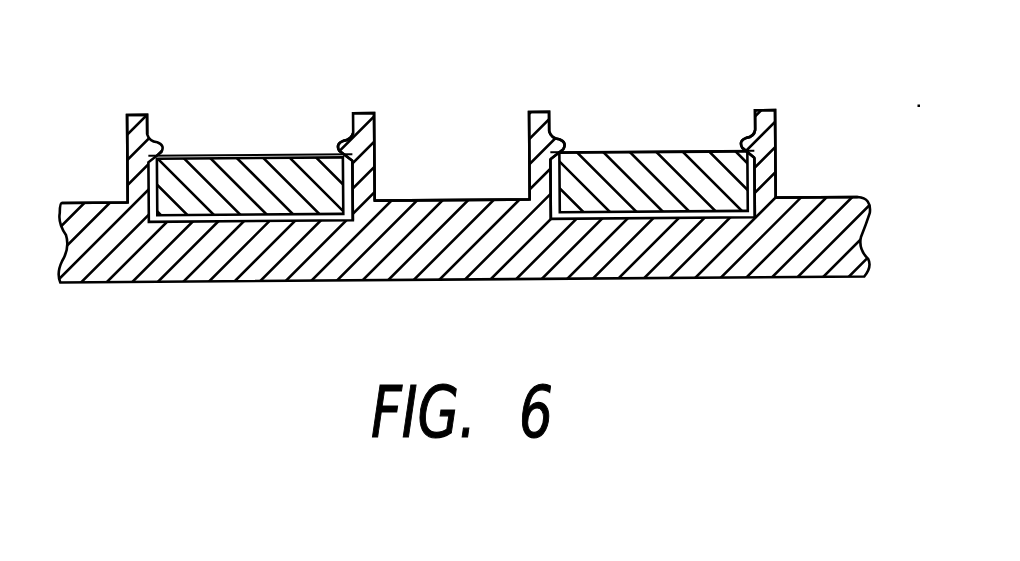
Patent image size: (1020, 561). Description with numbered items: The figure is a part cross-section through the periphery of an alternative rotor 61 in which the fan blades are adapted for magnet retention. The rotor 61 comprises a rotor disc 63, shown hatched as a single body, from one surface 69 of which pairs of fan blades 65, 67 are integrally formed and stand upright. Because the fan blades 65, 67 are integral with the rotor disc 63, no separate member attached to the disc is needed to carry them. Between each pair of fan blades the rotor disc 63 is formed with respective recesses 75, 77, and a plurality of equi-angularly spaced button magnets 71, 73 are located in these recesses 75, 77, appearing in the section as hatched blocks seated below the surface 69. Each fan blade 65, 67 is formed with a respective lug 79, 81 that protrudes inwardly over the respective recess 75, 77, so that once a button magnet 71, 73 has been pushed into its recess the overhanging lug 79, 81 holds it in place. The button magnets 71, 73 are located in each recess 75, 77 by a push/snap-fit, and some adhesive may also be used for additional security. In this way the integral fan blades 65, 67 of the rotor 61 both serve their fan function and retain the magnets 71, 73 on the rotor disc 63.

The rotor 61 is at (510, 196).
The rotor disc 63 is at (768, 265).
The fan blade 65 is at (368, 136).
The fan blade 67 is at (530, 128).
The surface 69 is at (815, 200).
The button magnet 71 is at (208, 148).
The button magnet 73 is at (658, 142).
The recess 75 is at (270, 202).
The recess 77 is at (602, 199).
The lug 79 is at (344, 139).
The lug 81 is at (562, 141).